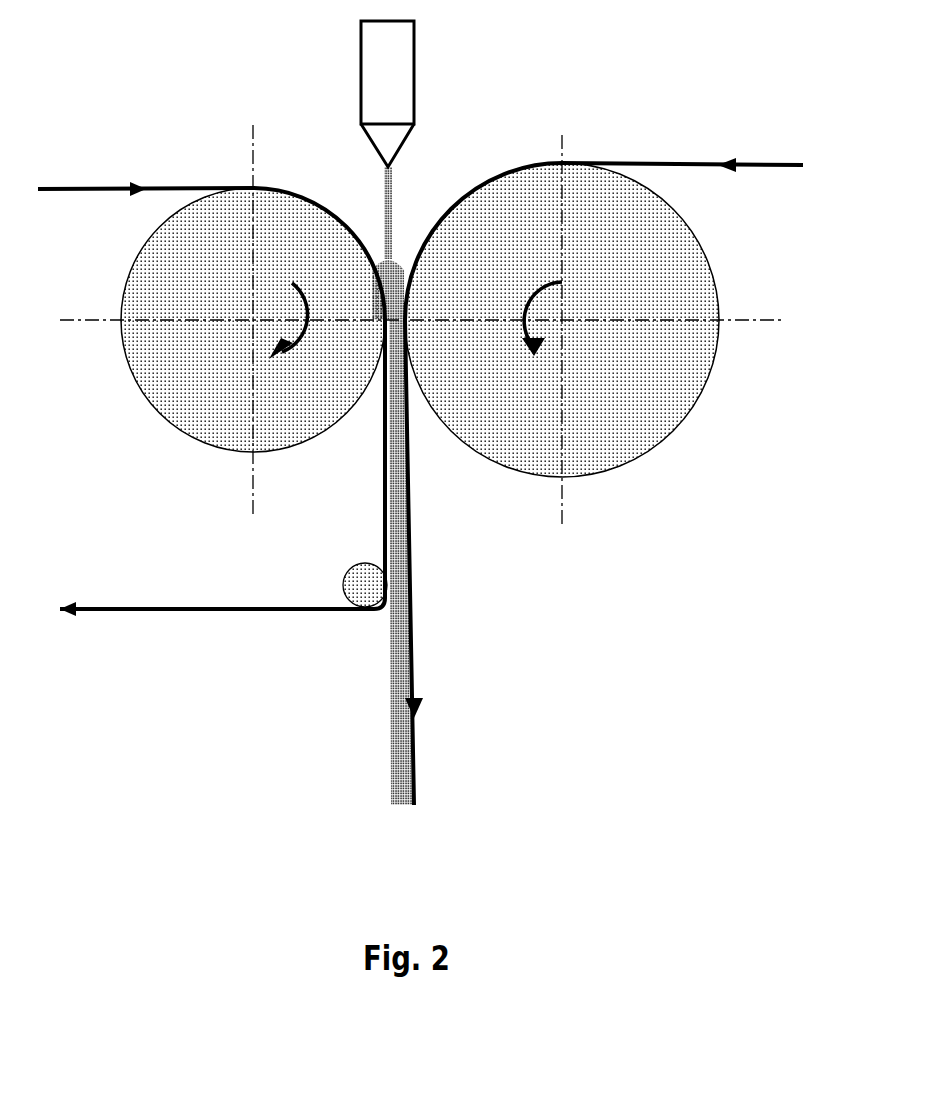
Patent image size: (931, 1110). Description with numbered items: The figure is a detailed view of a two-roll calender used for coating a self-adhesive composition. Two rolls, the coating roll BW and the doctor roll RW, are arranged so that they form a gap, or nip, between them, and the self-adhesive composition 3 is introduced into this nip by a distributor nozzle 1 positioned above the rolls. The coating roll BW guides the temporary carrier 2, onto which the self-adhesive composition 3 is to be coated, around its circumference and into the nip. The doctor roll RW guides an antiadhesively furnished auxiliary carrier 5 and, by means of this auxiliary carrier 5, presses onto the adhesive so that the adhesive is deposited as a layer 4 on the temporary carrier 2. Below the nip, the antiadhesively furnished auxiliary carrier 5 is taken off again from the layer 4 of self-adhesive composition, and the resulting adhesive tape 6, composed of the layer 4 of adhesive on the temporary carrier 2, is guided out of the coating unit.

The distributor nozzle 1 is at (395, 76).
The temporary carrier 2 is at (667, 160).
The self-adhesive composition 3 is at (397, 262).
The layer 4 is at (400, 673).
The antiadhesively furnished auxiliary carrier 5 is at (175, 183).
The adhesive tape 6 is at (385, 794).
The doctor roll RW is at (205, 355).
The coating roll BW is at (648, 263).